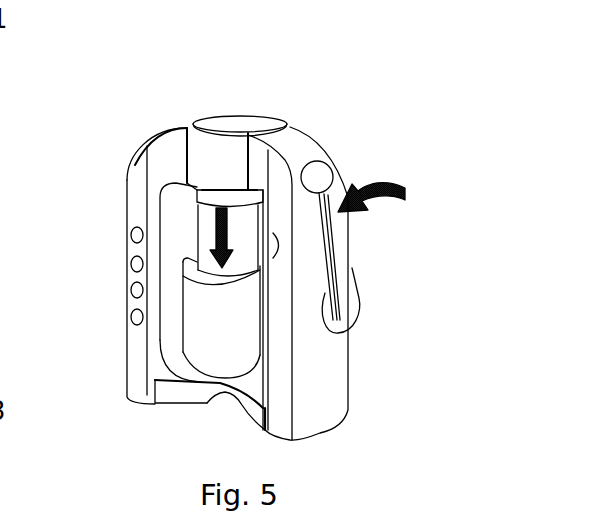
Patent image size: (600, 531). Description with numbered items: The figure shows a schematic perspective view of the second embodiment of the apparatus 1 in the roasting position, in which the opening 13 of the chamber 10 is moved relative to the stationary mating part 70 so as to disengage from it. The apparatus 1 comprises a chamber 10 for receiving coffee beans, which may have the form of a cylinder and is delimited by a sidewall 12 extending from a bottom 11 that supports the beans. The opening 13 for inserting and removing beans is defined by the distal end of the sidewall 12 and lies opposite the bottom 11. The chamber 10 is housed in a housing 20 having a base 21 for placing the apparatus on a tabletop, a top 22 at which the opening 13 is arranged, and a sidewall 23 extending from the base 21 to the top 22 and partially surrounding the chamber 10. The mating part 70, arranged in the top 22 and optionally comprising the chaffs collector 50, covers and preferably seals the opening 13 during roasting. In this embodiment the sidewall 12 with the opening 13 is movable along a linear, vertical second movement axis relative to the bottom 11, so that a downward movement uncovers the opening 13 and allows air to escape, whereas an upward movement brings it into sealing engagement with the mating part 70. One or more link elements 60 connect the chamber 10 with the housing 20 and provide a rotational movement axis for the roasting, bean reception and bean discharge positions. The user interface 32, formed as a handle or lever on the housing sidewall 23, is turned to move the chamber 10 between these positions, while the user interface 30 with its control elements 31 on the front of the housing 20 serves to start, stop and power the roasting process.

The apparatus 1 is at (392, 61).
The housing 20 is at (329, 111).
The top 22 is at (158, 150).
The mating part 70 is at (222, 145).
The chaffs collector 50 is at (238, 111).
The opening 13 is at (217, 193).
The chamber 10 is at (162, 203).
The sidewall 12 is at (213, 222).
The control elements 31 is at (135, 265).
The user interface 30 is at (95, 305).
The base 21 is at (172, 392).
The link elements 60 is at (249, 312).
The bottom 11 is at (240, 350).
The user interface 32 is at (338, 268).
The sidewall 23 is at (313, 327).